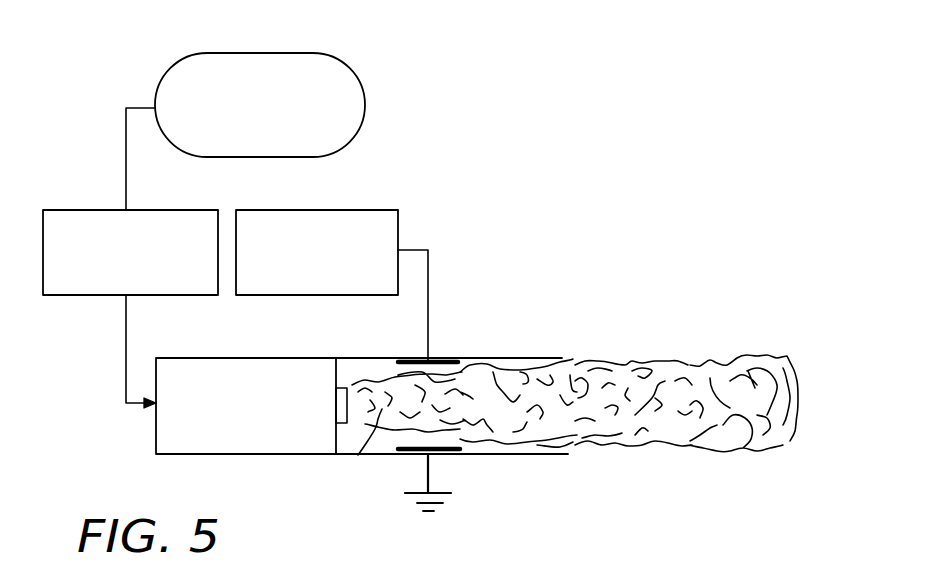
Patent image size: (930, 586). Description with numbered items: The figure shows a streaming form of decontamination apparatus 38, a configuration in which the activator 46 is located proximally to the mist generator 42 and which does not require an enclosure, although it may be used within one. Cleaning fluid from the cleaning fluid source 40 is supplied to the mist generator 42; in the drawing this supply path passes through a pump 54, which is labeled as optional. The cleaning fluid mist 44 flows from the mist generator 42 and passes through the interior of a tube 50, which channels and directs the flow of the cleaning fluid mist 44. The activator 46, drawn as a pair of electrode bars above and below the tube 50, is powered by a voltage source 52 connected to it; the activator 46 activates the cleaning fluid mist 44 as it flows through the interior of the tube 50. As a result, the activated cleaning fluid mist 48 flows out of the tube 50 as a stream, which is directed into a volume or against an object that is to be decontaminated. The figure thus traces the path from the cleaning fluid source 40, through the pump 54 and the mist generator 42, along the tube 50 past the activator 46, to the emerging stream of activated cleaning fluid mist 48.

The decontamination apparatus 38 is at (412, 69).
The cleaning fluid source 40 is at (271, 53).
The mist generator 42 is at (200, 455).
The cleaning fluid mist 44 is at (358, 455).
The activator 46 is at (445, 360).
The activated cleaning fluid mist 48 is at (731, 449).
The tube 50 is at (518, 455).
The voltage source 52 is at (384, 210).
The pump (optional) 54 is at (85, 210).